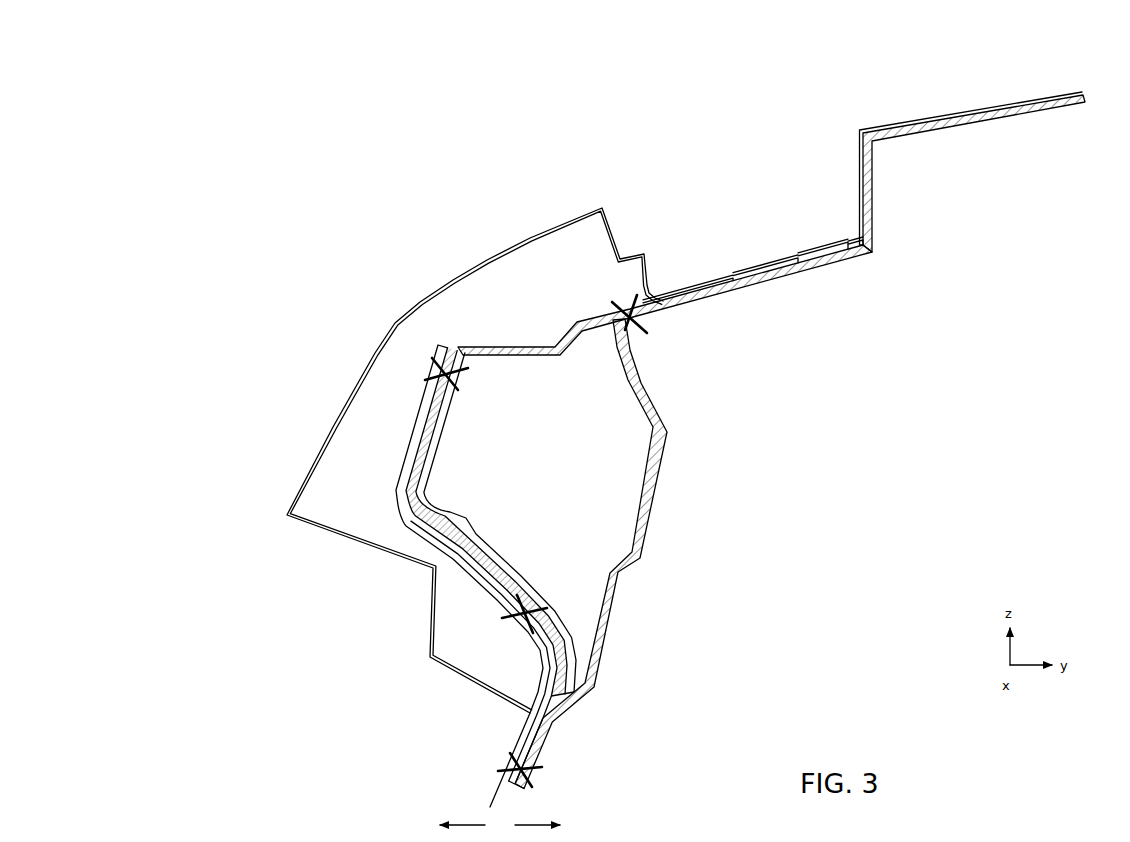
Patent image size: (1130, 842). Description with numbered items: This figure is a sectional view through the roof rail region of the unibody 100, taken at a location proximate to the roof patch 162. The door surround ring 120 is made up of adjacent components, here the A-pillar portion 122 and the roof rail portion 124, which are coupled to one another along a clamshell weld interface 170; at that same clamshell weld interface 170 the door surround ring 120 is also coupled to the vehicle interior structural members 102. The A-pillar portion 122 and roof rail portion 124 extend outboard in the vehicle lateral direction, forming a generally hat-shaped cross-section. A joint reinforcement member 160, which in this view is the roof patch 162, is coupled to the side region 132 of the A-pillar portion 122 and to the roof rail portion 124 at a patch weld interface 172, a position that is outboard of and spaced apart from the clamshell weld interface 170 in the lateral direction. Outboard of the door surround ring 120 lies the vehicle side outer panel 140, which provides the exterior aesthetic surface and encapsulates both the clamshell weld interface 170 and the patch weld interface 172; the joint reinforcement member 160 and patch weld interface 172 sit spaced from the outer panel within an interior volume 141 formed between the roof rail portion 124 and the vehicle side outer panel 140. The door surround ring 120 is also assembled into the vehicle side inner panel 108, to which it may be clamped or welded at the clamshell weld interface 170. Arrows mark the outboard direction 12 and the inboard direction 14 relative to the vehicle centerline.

The unibody 100 is at (273, 139).
The vehicle interior structural members 102 is at (1053, 84).
The vehicle side inner panel 108 is at (655, 505).
The door surround ring 120 is at (522, 524).
The A-pillar portion 122 is at (560, 660).
The roof rail portion 124 is at (533, 347).
The side region 132 is at (533, 652).
The vehicle side outer panel 140 is at (543, 238).
The interior volume 141 is at (492, 294).
The joint reinforcement member 160 is at (388, 462).
The roof patch 162 is at (397, 490).
The clamshell weld interface 170 is at (638, 323).
The patch weld interface 172 is at (462, 382).
The direction 12 is at (455, 824).
The direction 14 is at (543, 824).